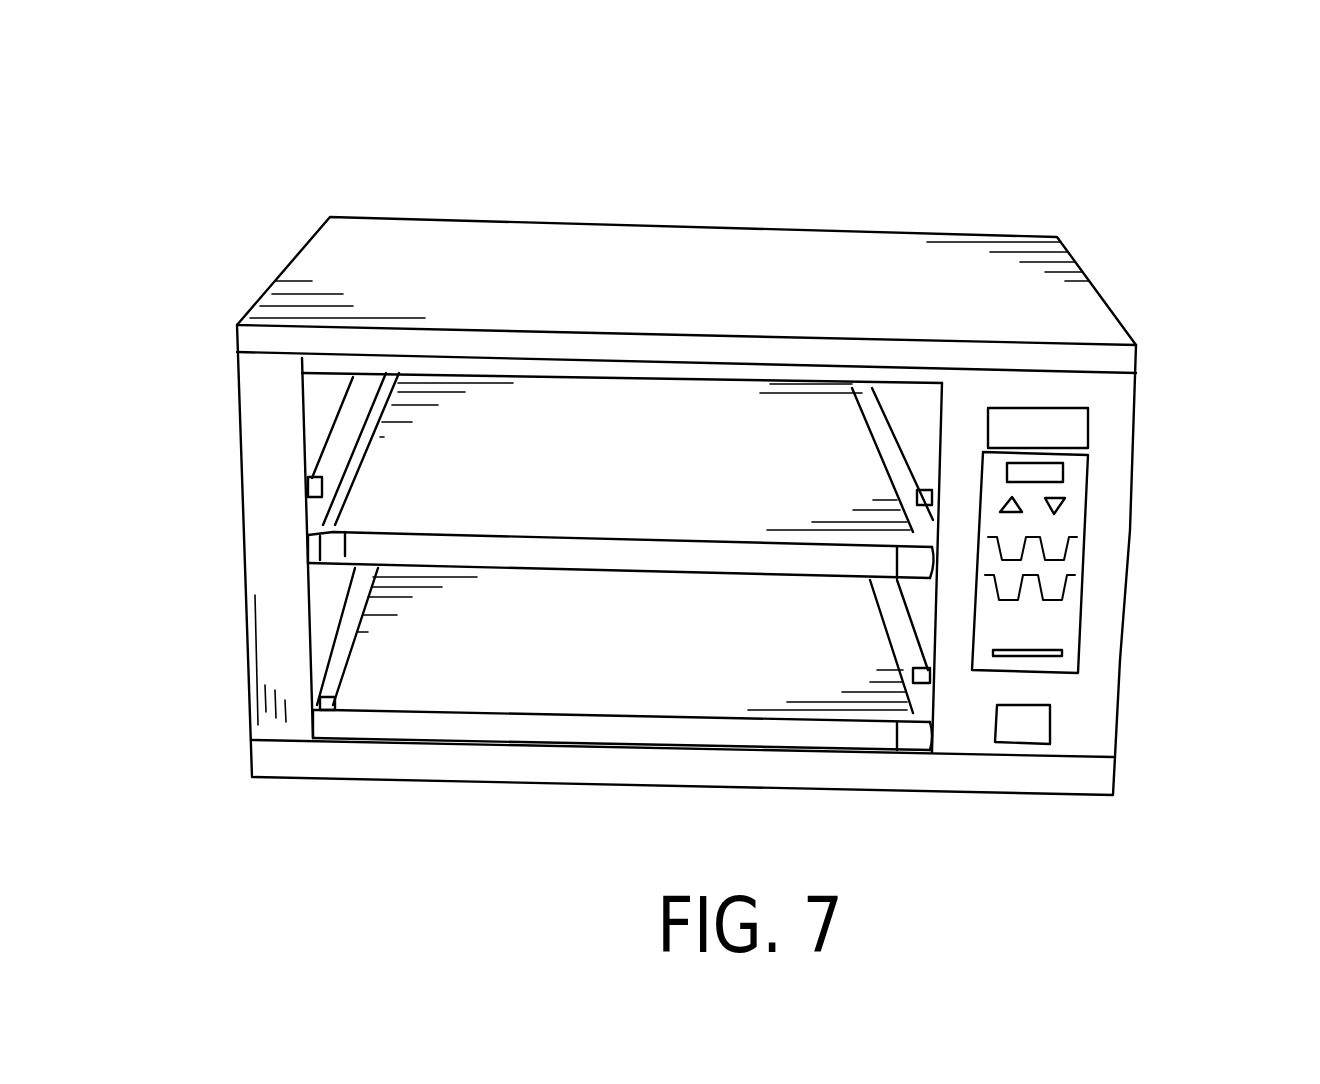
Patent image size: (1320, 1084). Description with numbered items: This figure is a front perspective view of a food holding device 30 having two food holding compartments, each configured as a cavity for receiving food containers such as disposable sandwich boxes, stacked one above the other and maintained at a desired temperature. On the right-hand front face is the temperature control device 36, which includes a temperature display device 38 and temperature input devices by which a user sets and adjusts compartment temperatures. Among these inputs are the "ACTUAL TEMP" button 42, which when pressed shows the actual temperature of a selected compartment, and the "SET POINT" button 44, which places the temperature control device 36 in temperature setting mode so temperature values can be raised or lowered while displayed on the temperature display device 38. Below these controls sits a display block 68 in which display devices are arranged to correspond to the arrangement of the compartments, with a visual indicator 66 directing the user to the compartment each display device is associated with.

The food holding device 30 is at (792, 242).
The temperature control device 36 is at (1102, 423).
The temperature display device 38 is at (1055, 470).
The "ACTUAL TEMP" button 42 is at (1003, 498).
The "SET POINT" button 44 is at (1063, 506).
The visual indicator 66 is at (1065, 533).
The display block 68 is at (1088, 641).